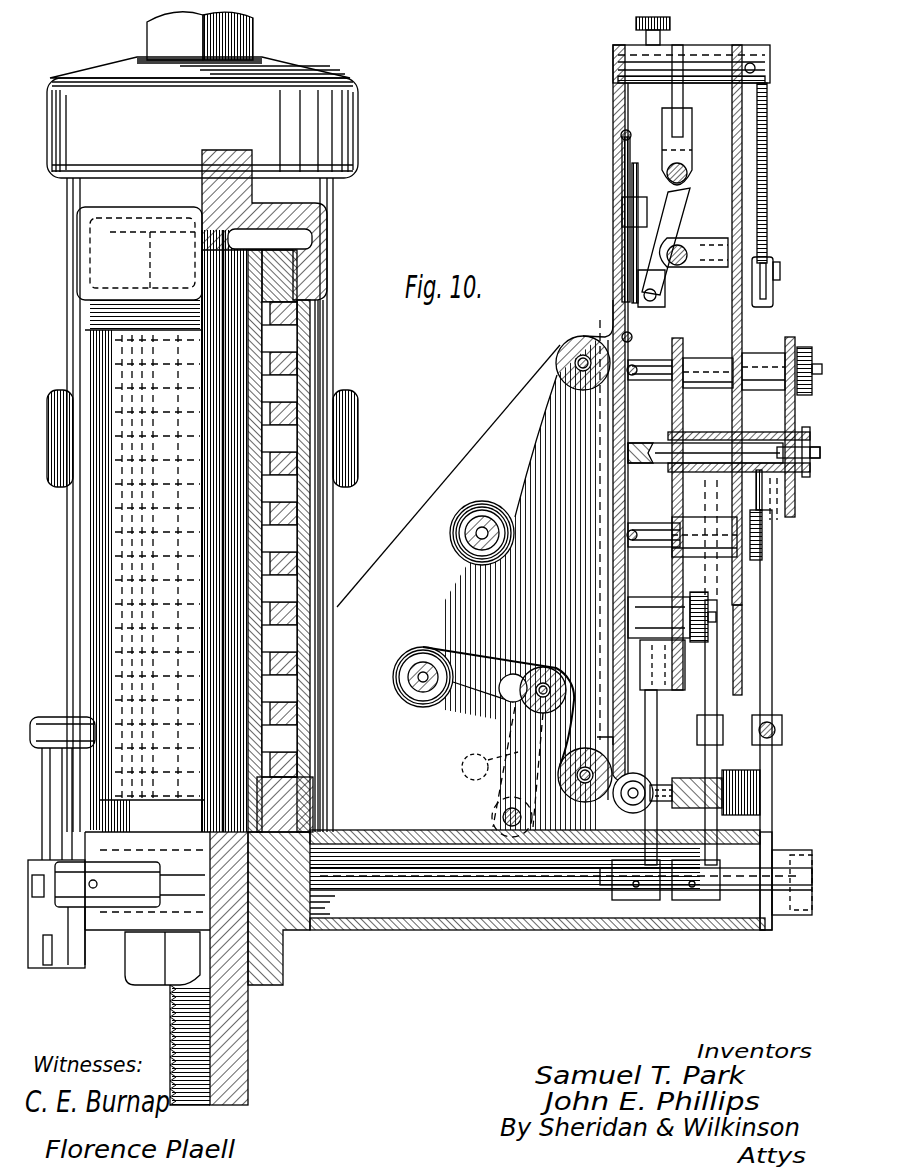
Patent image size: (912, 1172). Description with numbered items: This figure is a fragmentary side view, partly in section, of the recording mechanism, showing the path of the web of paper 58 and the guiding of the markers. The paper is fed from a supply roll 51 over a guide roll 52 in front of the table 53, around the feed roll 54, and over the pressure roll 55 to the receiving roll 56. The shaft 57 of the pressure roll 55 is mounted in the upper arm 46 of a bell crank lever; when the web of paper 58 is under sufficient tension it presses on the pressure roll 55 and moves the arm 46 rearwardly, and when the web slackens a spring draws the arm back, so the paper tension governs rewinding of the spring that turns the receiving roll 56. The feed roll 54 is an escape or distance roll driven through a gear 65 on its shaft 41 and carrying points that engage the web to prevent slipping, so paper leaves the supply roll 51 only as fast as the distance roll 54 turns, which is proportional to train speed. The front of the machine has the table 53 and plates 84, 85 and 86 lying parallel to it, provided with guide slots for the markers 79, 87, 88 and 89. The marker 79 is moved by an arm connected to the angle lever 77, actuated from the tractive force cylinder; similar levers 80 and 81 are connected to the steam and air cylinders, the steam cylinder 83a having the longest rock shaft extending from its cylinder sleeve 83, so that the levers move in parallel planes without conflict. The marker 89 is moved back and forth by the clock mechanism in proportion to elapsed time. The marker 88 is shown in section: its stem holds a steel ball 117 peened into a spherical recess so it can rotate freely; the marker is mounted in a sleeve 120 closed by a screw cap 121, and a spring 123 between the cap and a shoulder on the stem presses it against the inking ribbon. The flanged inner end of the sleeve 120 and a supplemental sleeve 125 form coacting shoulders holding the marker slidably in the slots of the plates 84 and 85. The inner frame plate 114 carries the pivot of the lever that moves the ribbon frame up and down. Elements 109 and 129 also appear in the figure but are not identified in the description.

The shaft 41 is at (567, 795).
The bell crank lever arm 46 is at (490, 766).
The supply roll 51 is at (458, 538).
The guide roll 52 is at (574, 388).
The table 53 is at (613, 420).
The feed roll 54 is at (616, 806).
The pressure roll 55 is at (548, 670).
The receiving roll 56 is at (396, 693).
The shaft 57 is at (517, 703).
The web of paper 58 is at (517, 655).
The gear 65 is at (588, 750).
The angle lever 77 is at (711, 652).
The marker 79 is at (645, 532).
The lever 80 is at (772, 686).
The lever 81 is at (654, 718).
The cylinder sleeve 83 is at (310, 353).
The steam cylinder 83a is at (263, 798).
The plate 84 is at (684, 404).
The plate 85 is at (734, 416).
The plate 86 is at (795, 428).
The marker 87 is at (630, 614).
The marker 88 is at (655, 445).
The marker 89 is at (645, 372).
The cable anchor 109 is at (630, 335).
The inner frame plate 114 is at (613, 215).
The steel ball 117 is at (613, 470).
The sleeve 120 is at (701, 474).
The screw cap 121 is at (806, 478).
The spring 123 is at (776, 517).
The supplemental sleeve 125 is at (753, 434).
The bearing 129 is at (668, 474).